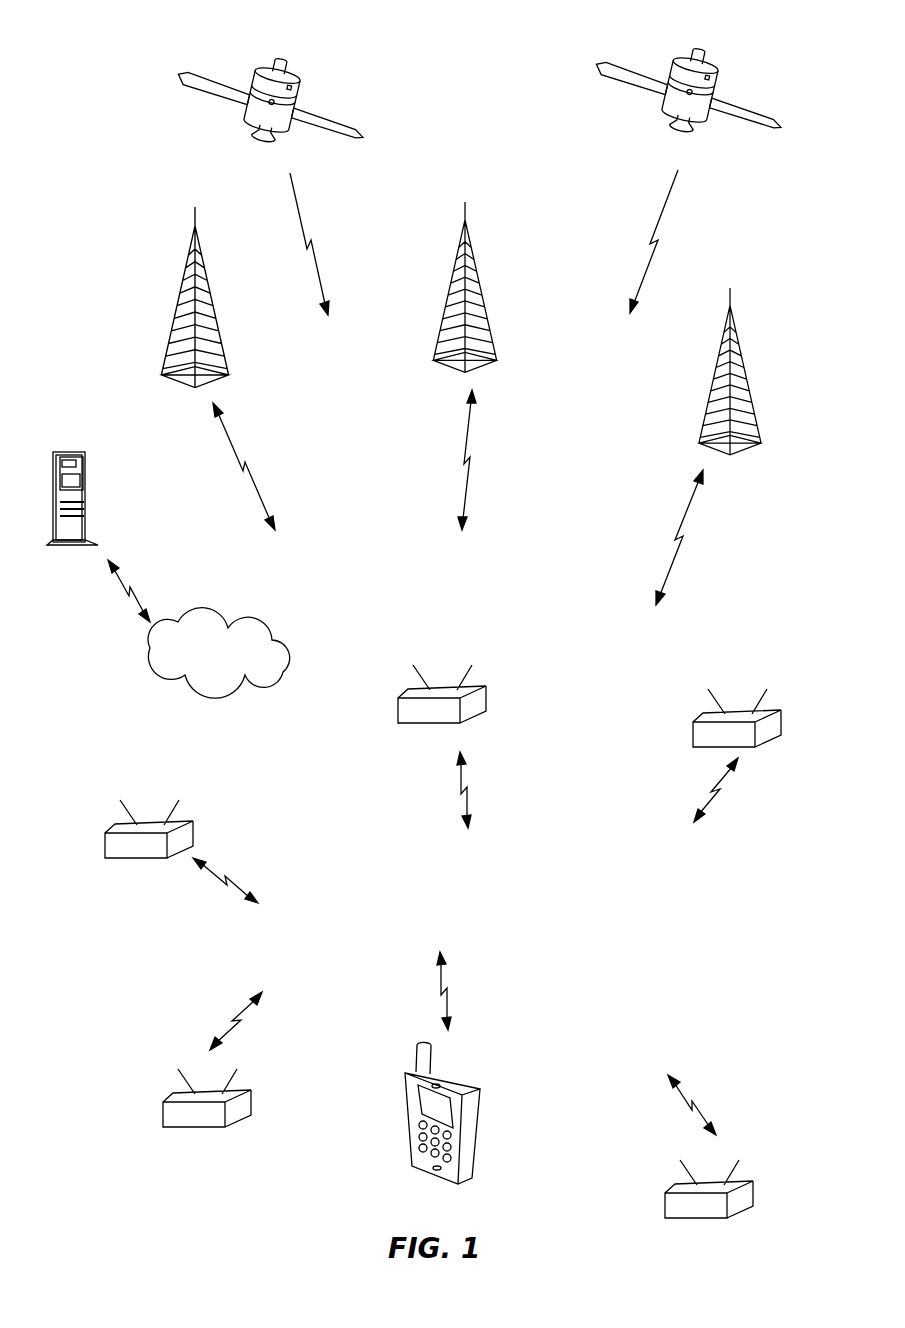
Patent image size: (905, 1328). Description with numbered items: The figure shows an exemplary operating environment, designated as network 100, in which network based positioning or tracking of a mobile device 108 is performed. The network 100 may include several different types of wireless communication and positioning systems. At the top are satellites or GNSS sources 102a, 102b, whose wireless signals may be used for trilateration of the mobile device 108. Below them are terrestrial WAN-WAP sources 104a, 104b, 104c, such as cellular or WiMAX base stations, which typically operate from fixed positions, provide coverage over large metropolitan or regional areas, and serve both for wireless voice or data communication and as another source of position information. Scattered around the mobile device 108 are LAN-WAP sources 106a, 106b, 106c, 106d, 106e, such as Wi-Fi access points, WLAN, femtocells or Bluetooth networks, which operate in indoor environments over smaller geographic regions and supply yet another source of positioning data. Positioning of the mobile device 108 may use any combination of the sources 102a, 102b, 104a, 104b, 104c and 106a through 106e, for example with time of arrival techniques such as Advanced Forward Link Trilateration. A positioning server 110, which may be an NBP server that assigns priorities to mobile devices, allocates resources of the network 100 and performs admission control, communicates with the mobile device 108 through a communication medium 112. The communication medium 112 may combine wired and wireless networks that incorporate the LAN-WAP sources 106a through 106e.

The network 100 is at (124, 69).
The satellite or GNSS source 102a is at (285, 58).
The satellite or GNSS source 102b is at (690, 48).
The WAN-WAP source 104a is at (195, 222).
The WAN-WAP source 104b is at (465, 212).
The WAN-WAP source 104c is at (730, 300).
The LAN-WAP source 106a is at (192, 822).
The LAN-WAP source 106b is at (487, 690).
The LAN-WAP source 106c is at (693, 724).
The LAN-WAP source 106d is at (250, 1092).
The LAN-WAP source 106e is at (665, 1195).
The mobile device 108 is at (482, 1096).
The positioning server 110 is at (68, 452).
The communication medium 112 is at (243, 608).